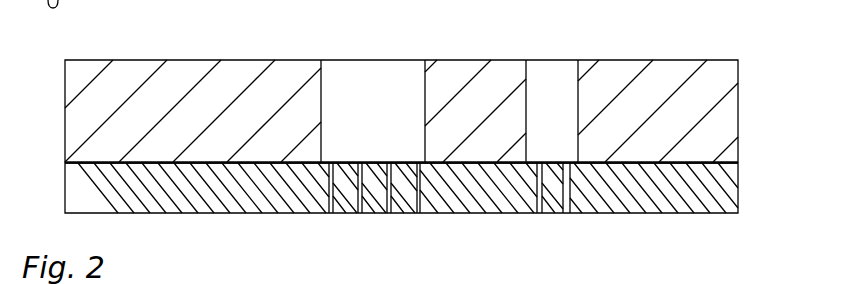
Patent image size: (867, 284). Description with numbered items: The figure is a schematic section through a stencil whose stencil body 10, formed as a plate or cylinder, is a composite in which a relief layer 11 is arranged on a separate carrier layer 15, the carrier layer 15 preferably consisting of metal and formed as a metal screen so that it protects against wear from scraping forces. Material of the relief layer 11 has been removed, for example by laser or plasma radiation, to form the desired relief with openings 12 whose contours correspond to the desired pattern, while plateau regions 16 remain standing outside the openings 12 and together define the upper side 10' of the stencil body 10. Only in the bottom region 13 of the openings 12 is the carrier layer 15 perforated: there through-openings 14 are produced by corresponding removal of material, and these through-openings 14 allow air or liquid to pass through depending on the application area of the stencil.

The stencil body 10 is at (415, 81).
The upper side 10' is at (197, 88).
The relief layer 11 is at (640, 100).
The openings 12 is at (375, 86).
The bottom region 13 is at (345, 162).
The through-openings 14 is at (553, 188).
The carrier layer 15 is at (635, 192).
The plateau regions 16 is at (473, 56).